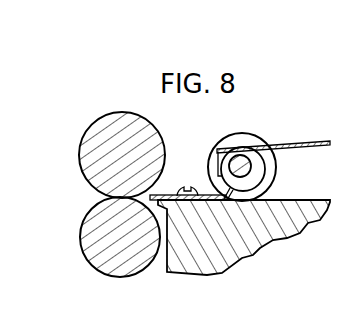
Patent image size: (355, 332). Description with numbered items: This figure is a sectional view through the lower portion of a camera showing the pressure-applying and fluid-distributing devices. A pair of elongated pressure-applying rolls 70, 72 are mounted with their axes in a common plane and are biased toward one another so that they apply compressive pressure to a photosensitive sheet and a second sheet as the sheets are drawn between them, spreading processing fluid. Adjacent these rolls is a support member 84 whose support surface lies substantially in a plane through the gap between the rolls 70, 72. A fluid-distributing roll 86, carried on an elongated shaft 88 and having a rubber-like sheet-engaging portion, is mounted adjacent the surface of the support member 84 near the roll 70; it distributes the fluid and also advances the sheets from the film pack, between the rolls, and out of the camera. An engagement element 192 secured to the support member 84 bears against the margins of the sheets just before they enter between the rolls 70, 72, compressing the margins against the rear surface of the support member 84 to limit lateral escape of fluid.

The pressure-applying roll 70 is at (117, 113).
The pressure-applying roll 72 is at (104, 269).
The support member 84 is at (260, 244).
The fluid-distributing roll 86 is at (248, 133).
The shaft 88 is at (251, 170).
The engagement element 192 is at (168, 195).